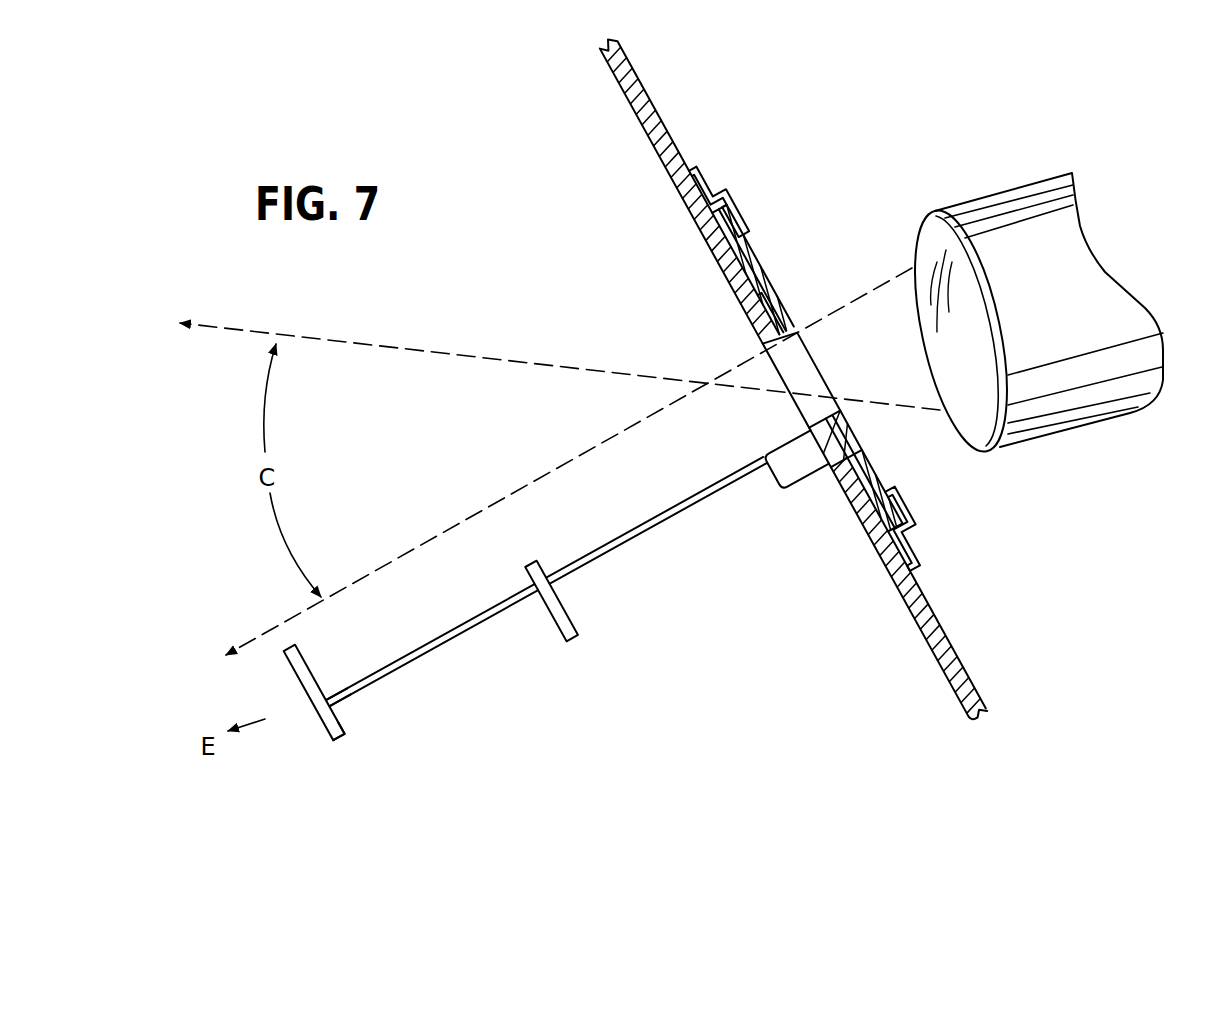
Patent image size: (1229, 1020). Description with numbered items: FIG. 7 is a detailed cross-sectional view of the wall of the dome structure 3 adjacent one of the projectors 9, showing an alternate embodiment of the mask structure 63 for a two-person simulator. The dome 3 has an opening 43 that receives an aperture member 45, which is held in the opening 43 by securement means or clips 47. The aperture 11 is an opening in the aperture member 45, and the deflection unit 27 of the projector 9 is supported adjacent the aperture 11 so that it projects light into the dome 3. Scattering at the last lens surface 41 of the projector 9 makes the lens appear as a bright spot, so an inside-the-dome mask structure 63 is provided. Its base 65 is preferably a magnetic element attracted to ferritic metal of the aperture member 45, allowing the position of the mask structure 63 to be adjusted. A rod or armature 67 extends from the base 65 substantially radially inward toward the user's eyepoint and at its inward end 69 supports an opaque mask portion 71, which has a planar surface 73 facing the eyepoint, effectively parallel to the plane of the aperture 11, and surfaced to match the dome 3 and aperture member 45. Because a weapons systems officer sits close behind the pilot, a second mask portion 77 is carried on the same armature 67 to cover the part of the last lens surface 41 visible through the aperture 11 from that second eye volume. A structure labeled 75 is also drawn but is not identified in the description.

The dome structure 3 is at (846, 397).
The projector 9 is at (1030, 321).
The aperture 11 is at (790, 332).
The deflection unit 27 is at (993, 196).
The last lens surface 41 is at (980, 418).
The opening 43 is at (739, 302).
The aperture member 45 is at (750, 260).
The clips 47 is at (723, 194).
The mask structure 63 is at (521, 634).
The base 65 is at (793, 478).
The rod or armature 67 is at (483, 628).
The inward end 69 is at (341, 705).
The mask portion 71 is at (311, 703).
The planar surface 73 is at (325, 731).
The hatched block 75 is at (840, 500).
The second mask portion 77 is at (567, 611).